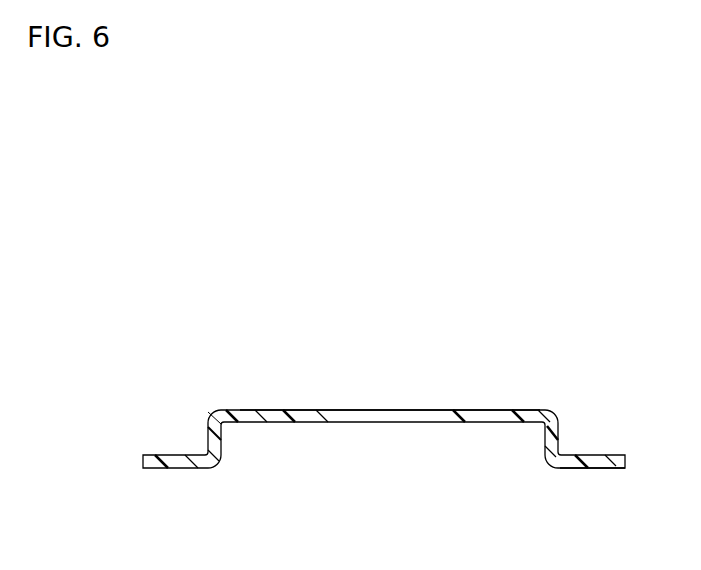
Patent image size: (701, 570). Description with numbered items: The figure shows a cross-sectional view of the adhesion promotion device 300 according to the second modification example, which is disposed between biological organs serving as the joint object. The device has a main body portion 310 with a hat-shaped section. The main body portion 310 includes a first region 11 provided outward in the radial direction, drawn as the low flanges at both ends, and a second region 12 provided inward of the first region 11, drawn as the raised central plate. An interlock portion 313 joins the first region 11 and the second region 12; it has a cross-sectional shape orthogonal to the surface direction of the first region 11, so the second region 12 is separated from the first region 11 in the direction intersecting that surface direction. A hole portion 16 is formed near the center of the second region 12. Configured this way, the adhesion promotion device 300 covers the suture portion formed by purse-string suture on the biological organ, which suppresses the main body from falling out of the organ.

The adhesion promotion device 300 is at (110, 247).
The main body portion 310 is at (204, 421).
The hole portion 16 is at (328, 410).
The second region 12 is at (487, 410).
The interlock portion 313 is at (562, 440).
The first region 11 is at (613, 469).